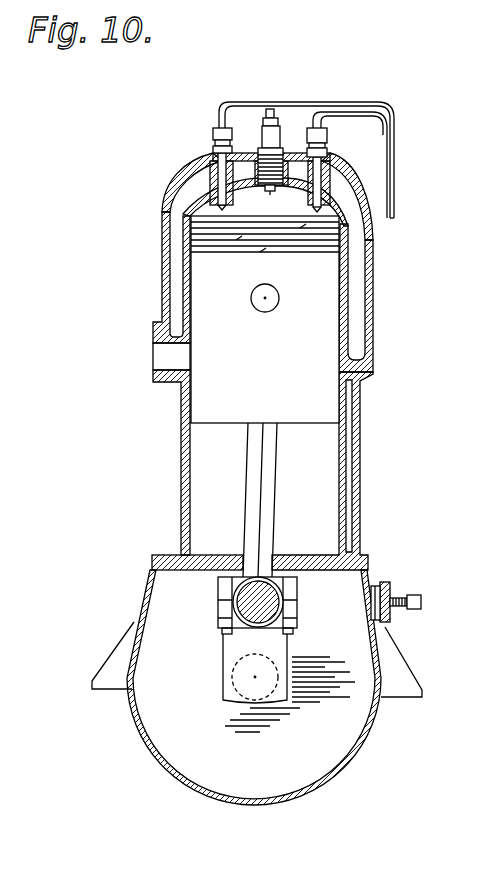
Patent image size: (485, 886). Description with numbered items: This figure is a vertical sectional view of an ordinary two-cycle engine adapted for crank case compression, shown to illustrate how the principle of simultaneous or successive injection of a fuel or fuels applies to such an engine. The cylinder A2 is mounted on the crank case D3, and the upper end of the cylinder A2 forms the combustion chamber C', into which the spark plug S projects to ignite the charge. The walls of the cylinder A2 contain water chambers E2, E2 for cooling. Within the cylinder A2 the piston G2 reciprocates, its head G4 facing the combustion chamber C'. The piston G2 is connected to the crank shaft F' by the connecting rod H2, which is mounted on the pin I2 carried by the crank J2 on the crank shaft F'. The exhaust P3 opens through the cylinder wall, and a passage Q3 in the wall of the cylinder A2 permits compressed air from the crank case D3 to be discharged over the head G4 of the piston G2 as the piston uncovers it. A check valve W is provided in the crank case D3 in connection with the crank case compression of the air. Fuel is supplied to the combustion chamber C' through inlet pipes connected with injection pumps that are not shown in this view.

The combustion chamber C' is at (238, 196).
The water chamber E2 is at (393, 298).
The exhaust P3 is at (163, 353).
The cylinder A2 is at (181, 438).
The passage Q3 is at (348, 470).
The piston G2 is at (265, 319).
The head of the piston G4 is at (350, 232).
The connecting rod H2 is at (262, 489).
The spark plug S is at (280, 153).
The crank shaft F' is at (230, 687).
The crank case D3 is at (135, 626).
The pin I2 is at (272, 605).
The crank J2 is at (233, 652).
The check valve W is at (392, 603).